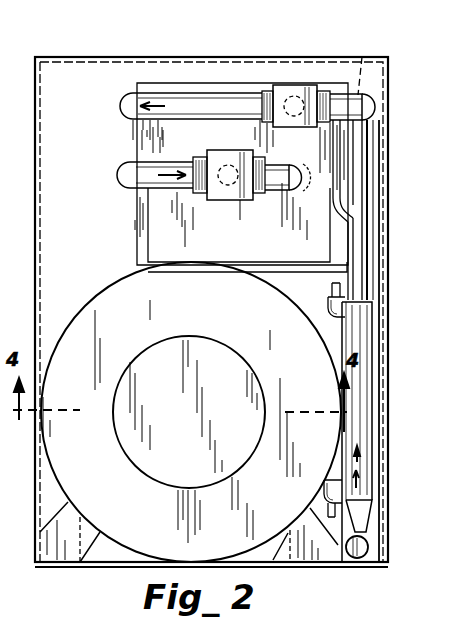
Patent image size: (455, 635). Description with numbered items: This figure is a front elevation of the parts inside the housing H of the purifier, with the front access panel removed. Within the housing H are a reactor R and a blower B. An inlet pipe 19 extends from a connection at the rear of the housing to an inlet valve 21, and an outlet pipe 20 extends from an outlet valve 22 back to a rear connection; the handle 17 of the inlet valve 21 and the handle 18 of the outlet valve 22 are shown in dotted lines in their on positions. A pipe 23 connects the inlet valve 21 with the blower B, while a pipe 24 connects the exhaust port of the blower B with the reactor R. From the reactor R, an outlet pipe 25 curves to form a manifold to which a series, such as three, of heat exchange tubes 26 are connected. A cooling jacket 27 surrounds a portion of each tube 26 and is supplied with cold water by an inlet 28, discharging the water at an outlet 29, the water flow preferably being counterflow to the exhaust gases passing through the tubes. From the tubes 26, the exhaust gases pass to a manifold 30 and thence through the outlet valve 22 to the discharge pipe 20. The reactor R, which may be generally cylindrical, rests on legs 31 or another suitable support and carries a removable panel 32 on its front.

The housing H is at (91, 47).
The blower B is at (133, 215).
The reactor R is at (97, 290).
The handle for inlet valve 17 is at (301, 185).
The handle for outlet valve 18 is at (362, 52).
The inlet pipe 19 is at (117, 172).
The outlet pipe 20 is at (120, 104).
The inlet valve 21 is at (242, 201).
The outlet valve 22 is at (287, 88).
The pipe 23 is at (298, 156).
The pipe 24 is at (348, 212).
The outlet pipe 25 is at (366, 544).
The heat exchange tubes 26 is at (375, 150).
The cooling jacket 27 is at (358, 334).
The inlet 28 is at (328, 292).
The outlet 29 is at (326, 486).
The manifold 30 is at (370, 100).
The legs 31 is at (67, 550).
The removable panel 32 is at (176, 352).